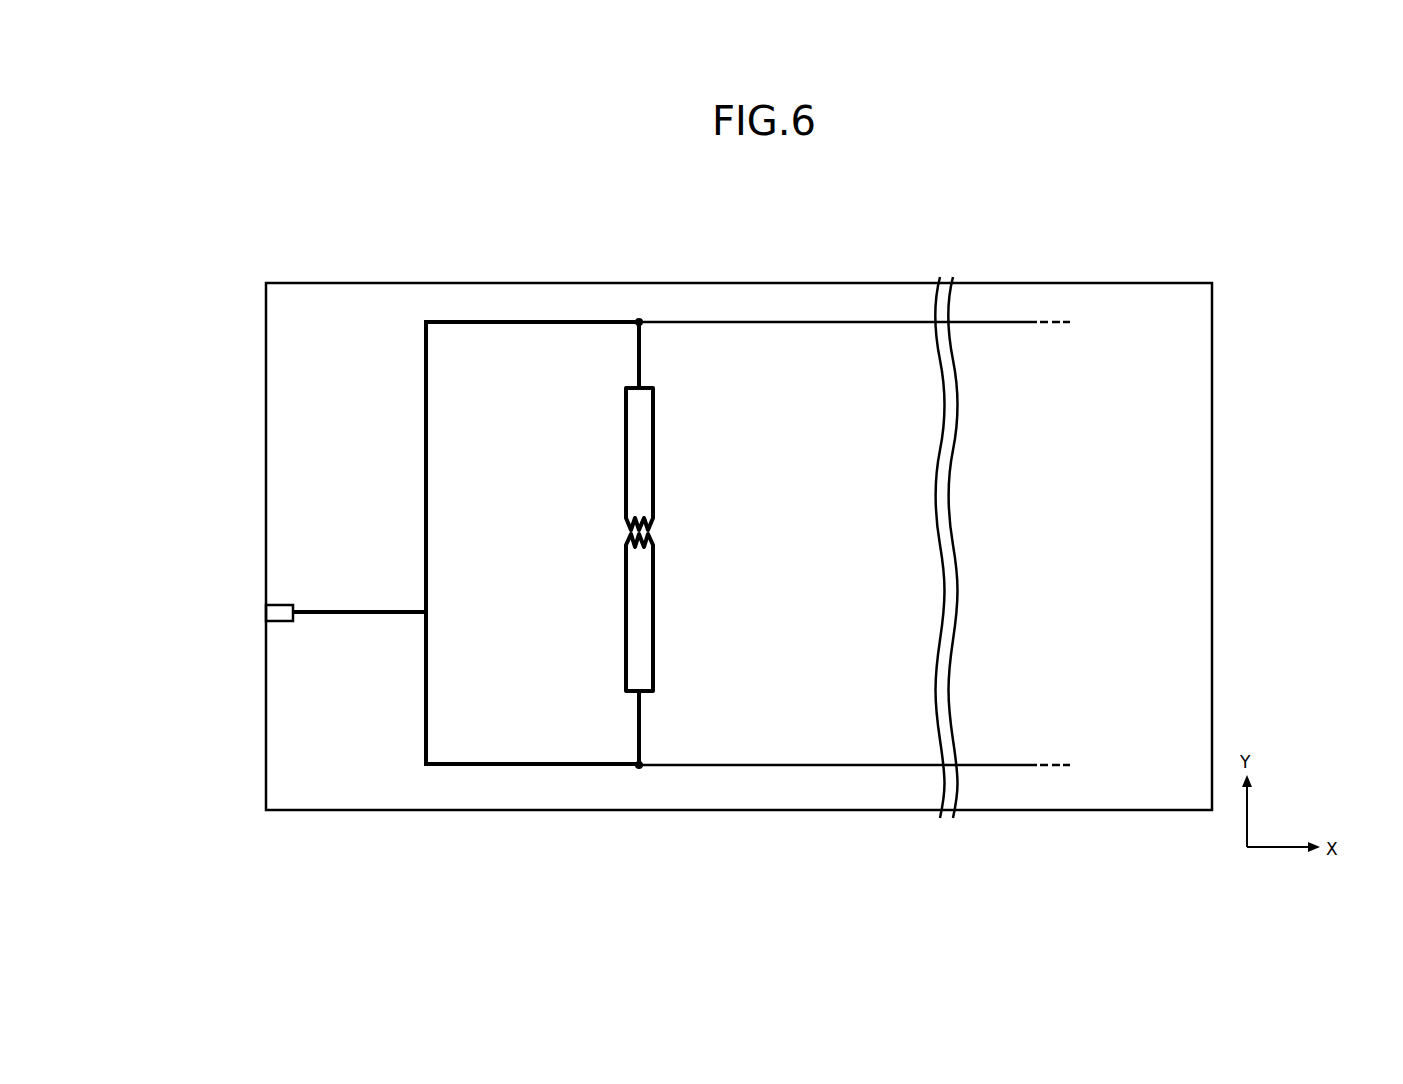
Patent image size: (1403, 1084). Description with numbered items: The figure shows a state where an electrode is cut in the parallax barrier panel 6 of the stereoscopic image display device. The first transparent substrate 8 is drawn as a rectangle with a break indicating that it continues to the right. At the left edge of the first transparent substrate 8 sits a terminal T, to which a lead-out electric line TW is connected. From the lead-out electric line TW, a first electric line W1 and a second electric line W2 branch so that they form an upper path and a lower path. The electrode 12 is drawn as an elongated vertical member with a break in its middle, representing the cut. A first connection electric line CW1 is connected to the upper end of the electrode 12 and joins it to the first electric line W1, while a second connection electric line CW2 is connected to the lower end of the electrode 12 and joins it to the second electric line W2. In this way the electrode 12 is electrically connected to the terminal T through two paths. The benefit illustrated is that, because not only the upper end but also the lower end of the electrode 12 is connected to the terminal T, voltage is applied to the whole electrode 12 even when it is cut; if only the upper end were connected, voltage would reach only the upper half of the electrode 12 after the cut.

The parallax barrier panel 6 is at (833, 249).
The first transparent substrate 8 is at (1213, 467).
The first electric line W1 is at (426, 378).
The second electric line W2 is at (461, 767).
The first connection electric line CW1 is at (641, 349).
The second connection electric line CW2 is at (641, 717).
The electrode 12 is at (655, 588).
The terminal T is at (273, 604).
The lead-out electric line TW is at (335, 605).